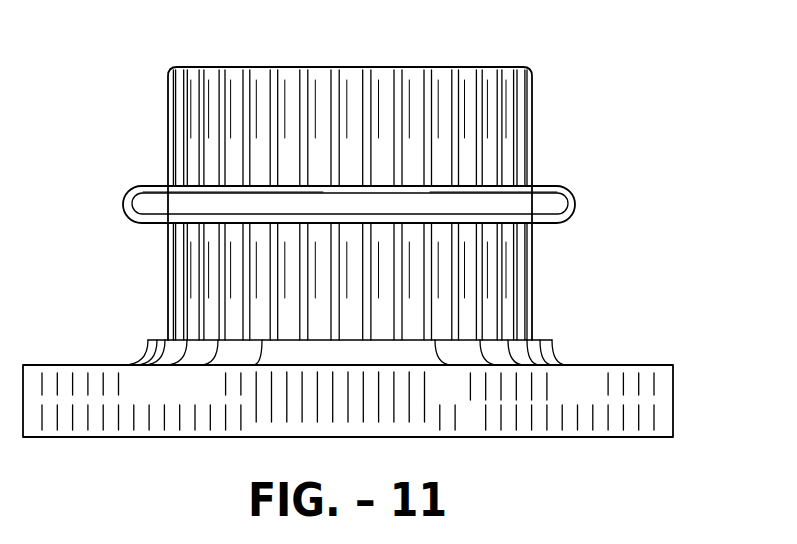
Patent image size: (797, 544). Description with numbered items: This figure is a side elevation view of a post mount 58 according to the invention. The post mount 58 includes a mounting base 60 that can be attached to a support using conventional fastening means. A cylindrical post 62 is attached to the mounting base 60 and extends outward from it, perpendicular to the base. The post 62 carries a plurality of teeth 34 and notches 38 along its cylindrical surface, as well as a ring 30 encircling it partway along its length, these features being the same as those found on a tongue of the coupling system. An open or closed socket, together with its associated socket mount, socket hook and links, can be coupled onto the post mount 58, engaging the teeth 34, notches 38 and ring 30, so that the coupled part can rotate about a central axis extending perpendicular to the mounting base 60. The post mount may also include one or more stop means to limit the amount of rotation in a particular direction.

The post mount 58 is at (410, 224).
The cylindrical post 62 is at (314, 188).
The teeth 34 is at (258, 82).
The notches 38 is at (367, 83).
The ring 30 is at (575, 200).
The mounting base 60 is at (675, 390).